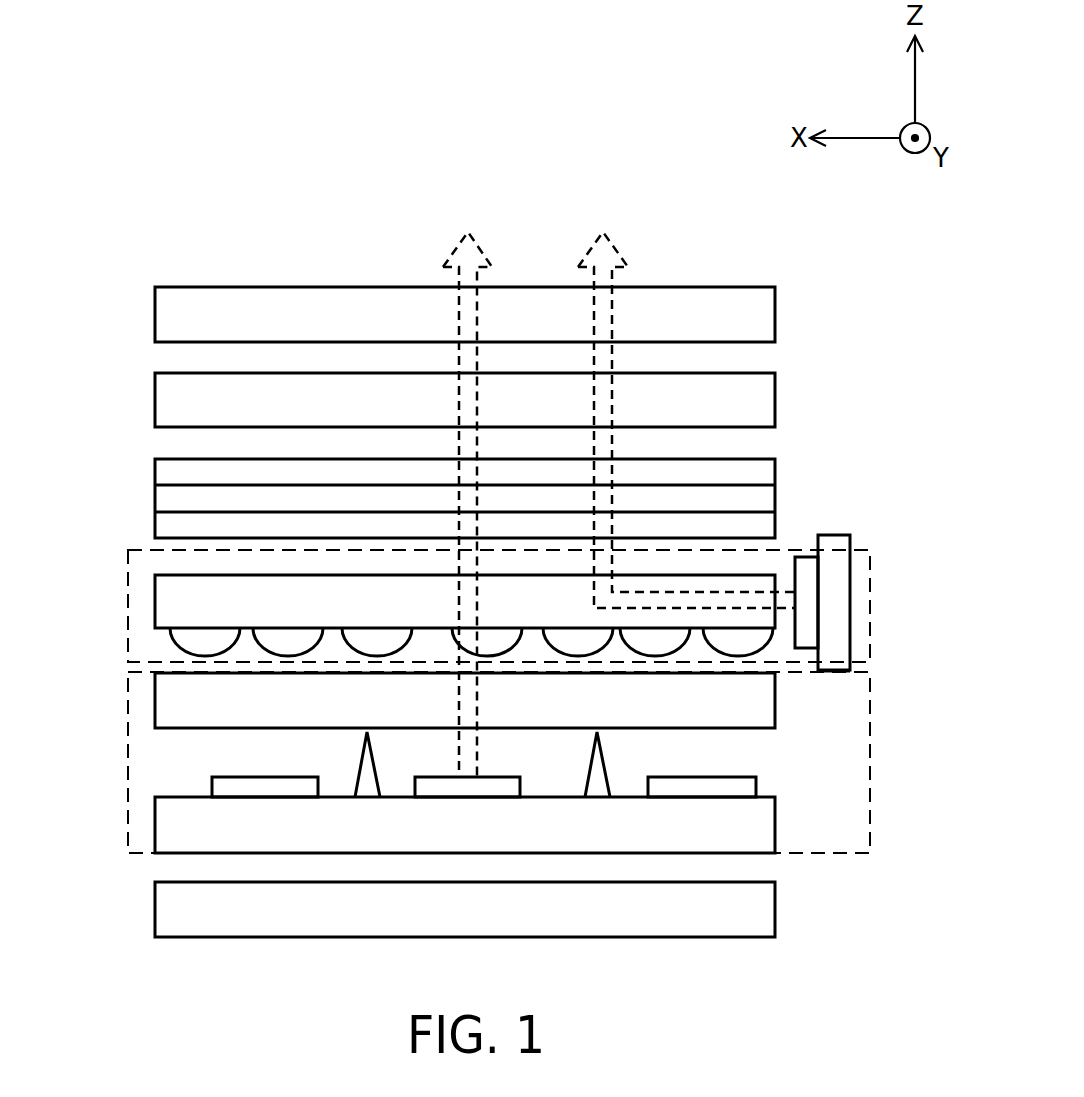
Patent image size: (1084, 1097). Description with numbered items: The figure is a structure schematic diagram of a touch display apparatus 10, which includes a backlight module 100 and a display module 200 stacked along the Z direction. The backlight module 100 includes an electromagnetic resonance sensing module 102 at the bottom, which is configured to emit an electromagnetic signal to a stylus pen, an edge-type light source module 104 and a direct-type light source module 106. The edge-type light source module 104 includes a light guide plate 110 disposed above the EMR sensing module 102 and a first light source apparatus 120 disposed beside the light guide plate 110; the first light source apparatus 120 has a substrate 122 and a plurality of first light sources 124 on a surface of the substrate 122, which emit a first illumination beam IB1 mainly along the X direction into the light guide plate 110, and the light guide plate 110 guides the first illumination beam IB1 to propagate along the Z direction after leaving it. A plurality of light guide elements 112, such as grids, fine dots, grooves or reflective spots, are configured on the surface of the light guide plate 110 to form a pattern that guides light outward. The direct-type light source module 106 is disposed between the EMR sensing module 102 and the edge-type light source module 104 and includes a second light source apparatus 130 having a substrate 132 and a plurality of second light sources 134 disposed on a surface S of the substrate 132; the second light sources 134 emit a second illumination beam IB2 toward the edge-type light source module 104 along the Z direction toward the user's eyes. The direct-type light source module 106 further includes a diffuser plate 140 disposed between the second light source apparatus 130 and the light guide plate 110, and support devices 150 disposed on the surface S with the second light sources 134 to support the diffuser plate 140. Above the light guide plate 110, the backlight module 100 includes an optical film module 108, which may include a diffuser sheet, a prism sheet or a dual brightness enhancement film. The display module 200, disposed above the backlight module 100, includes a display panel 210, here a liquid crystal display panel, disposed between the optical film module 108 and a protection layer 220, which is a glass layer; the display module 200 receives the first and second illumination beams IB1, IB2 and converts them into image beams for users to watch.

The touch display apparatus 10 is at (803, 258).
The backlight module 100 is at (132, 460).
The electromagnetic resonance (EMR) sensing module 102 is at (777, 908).
The edge-type light source module 104 is at (878, 605).
The direct-type light source module 106 is at (874, 805).
The optical film module 108 is at (777, 500).
The light guide plate 110 is at (772, 573).
The light guide element 112 is at (188, 646).
The first light source apparatus 120 is at (850, 540).
The substrate 122 is at (832, 672).
The first light sources 124 is at (805, 650).
The second light source apparatus 130 is at (777, 854).
The substrate 132 is at (777, 814).
The second light sources 134 is at (252, 776).
The diffuser plate 140 is at (777, 702).
The support device 150 is at (358, 764).
The display module 200 is at (146, 288).
The display panel 210 is at (777, 398).
The protection layer 220 is at (777, 313).
The surface S is at (762, 783).
The first illumination beam IB1 is at (616, 248).
The second illumination beam IB2 is at (447, 248).